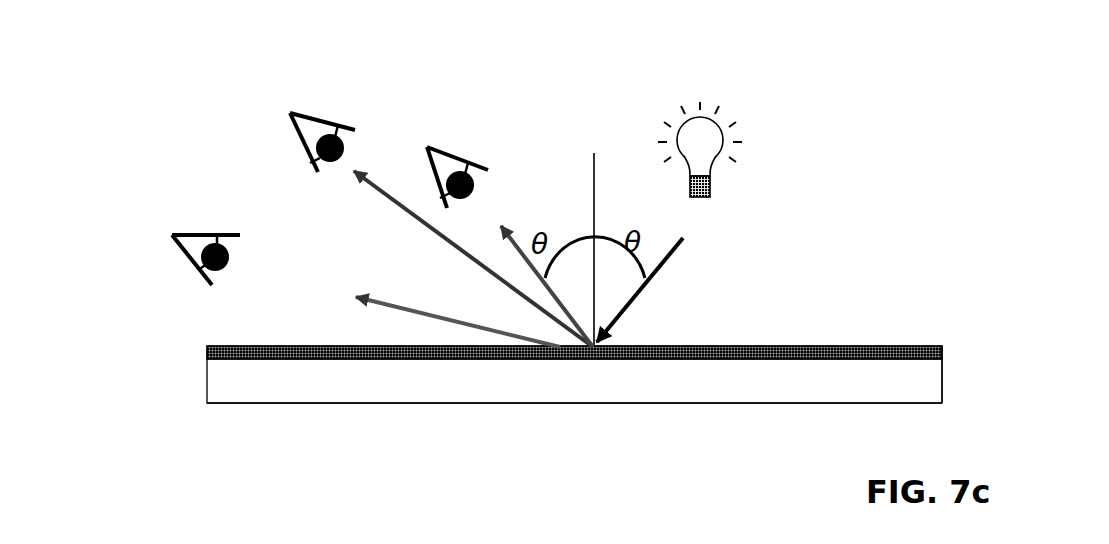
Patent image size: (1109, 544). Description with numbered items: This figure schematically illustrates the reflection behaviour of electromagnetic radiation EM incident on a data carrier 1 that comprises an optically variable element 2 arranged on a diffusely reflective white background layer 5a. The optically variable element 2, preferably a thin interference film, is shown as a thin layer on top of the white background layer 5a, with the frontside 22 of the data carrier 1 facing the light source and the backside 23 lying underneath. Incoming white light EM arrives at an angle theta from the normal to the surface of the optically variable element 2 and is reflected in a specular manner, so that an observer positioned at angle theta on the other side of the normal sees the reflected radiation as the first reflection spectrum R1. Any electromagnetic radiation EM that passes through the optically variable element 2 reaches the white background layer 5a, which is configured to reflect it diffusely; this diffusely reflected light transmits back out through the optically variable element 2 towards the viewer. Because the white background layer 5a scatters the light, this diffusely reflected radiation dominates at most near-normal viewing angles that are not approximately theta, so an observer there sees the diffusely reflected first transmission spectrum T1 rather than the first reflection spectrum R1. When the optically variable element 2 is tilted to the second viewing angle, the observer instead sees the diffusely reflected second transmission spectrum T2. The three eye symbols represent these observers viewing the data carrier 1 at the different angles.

The data carrier 1 is at (101, 289).
The optically variable element 2 is at (912, 345).
The frontside 22 is at (830, 345).
The backside 23 is at (230, 404).
The white background layer 5a is at (912, 385).
The electromagnetic radiation EM is at (679, 250).
The first reflection spectrum R1 is at (500, 222).
The first transmission spectrum T1 is at (382, 180).
The second transmission spectrum T2 is at (375, 248).